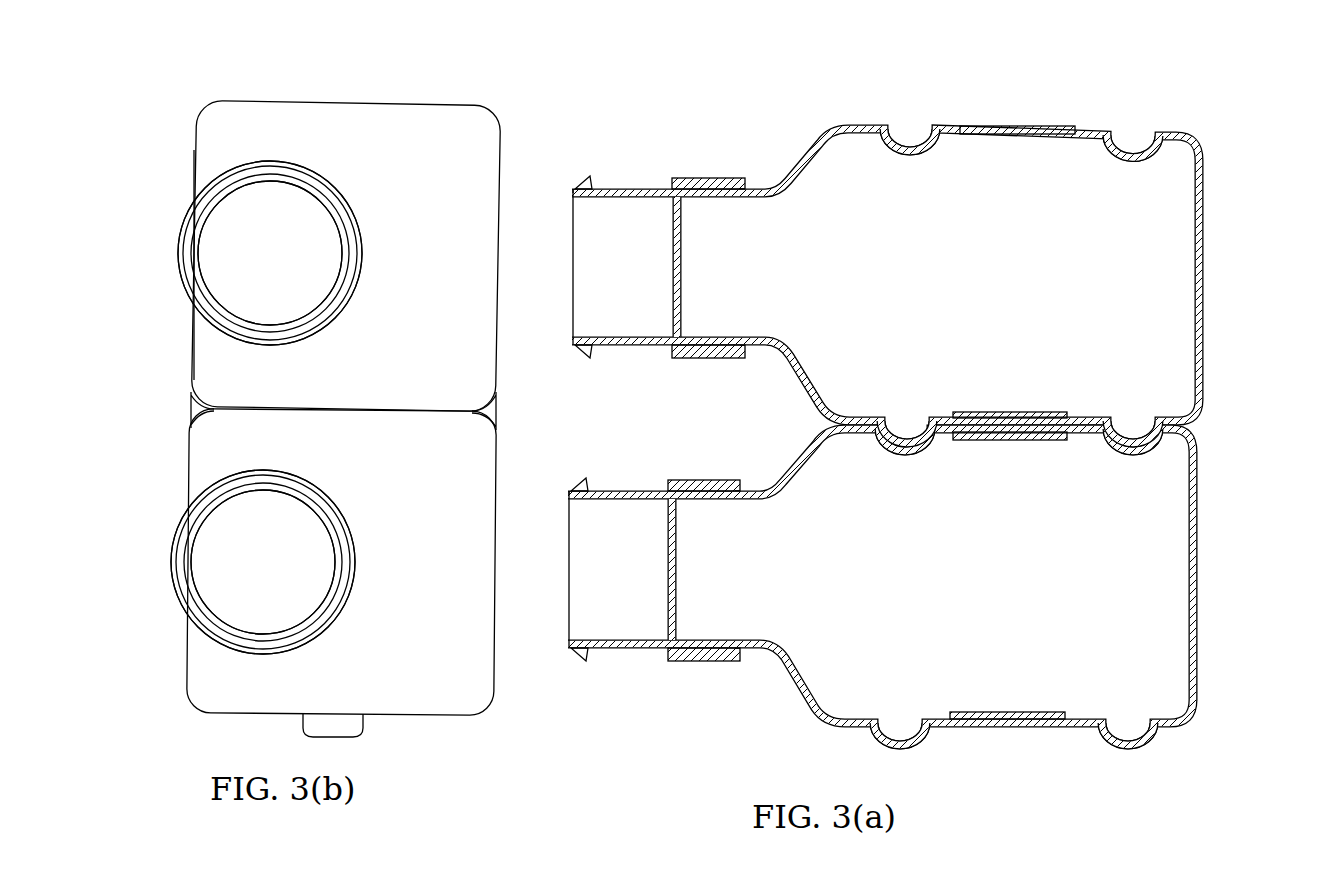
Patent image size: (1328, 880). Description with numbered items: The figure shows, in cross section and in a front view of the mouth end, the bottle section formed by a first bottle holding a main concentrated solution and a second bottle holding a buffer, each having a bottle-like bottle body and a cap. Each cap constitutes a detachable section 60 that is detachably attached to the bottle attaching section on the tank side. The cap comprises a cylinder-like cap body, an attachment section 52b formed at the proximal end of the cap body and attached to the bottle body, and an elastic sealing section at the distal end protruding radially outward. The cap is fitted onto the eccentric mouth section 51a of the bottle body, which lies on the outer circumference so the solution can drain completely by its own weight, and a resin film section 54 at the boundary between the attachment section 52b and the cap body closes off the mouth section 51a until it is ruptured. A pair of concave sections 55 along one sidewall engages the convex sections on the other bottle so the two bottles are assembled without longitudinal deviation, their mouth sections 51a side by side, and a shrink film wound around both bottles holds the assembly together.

The mouth section 51a is at (730, 190).
The attachment section 52b is at (688, 183).
The film section 54 is at (681, 280).
The concave section 55 is at (910, 148).
The detachable section 60 is at (614, 170).